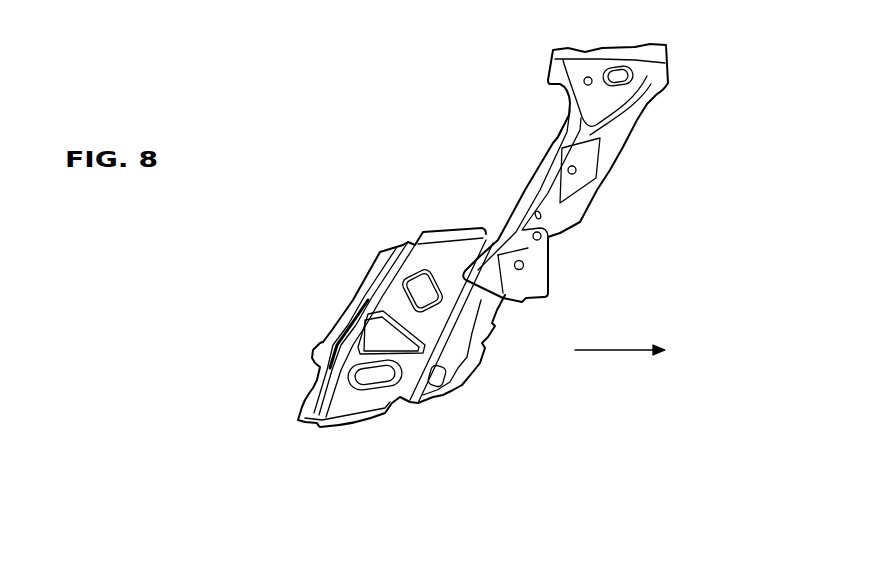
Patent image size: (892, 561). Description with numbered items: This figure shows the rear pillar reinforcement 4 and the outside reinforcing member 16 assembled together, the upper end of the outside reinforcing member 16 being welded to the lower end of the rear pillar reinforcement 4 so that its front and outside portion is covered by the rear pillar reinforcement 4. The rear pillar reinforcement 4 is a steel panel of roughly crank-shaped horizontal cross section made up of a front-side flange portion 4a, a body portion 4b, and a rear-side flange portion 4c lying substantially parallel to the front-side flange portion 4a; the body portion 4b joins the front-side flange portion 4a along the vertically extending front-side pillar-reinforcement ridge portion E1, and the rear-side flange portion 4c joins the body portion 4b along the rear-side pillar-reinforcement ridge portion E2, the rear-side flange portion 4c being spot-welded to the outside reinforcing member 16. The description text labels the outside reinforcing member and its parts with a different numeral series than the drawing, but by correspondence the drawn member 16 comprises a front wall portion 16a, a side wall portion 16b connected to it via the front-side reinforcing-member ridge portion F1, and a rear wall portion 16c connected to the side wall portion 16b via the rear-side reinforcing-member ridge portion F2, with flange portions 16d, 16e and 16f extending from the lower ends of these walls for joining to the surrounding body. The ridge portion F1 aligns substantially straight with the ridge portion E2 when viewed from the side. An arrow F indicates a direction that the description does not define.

The rear pillar reinforcement 4 is at (565, 173).
The front-side flange portion 4a is at (607, 133).
The body portion 4b is at (499, 257).
The rear-side flange portion 4c is at (522, 194).
The reinforcement member 16 is at (391, 329).
The reinforcement right flange portion 16a is at (460, 342).
The reinforcement upper flange 16b is at (437, 243).
The reinforcement side wall 16c is at (348, 332).
The reinforcement hole 16d is at (439, 399).
The reinforcement lower flange 16e is at (345, 424).
The reinforcement protrusion 16f is at (320, 347).
The front-side pillar-reinforcement ridge portion E1 is at (578, 194).
The rear-side pillar-reinforcement ridge portion E2 is at (557, 133).
The front-side reinforcing-member ridge portion F1 is at (462, 304).
The rear-side reinforcing-member ridge portion F2 is at (373, 297).
The vehicle front direction F is at (615, 352).